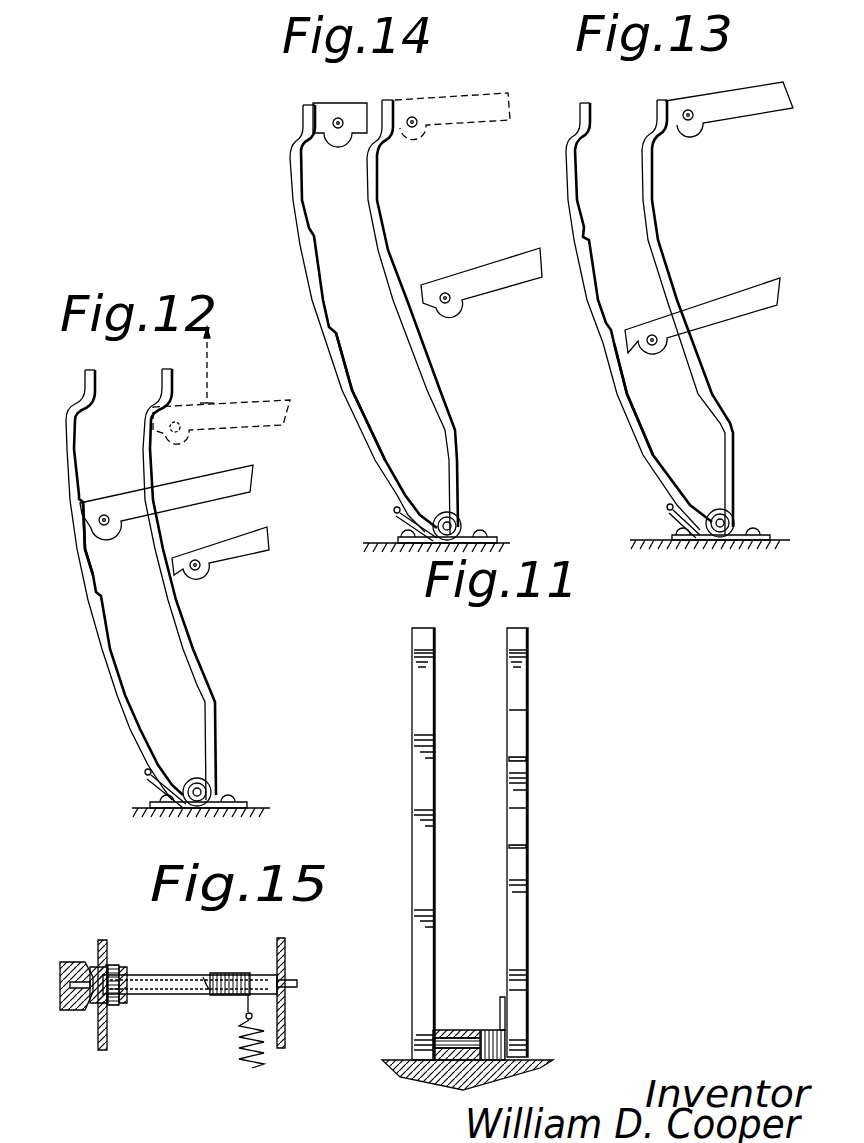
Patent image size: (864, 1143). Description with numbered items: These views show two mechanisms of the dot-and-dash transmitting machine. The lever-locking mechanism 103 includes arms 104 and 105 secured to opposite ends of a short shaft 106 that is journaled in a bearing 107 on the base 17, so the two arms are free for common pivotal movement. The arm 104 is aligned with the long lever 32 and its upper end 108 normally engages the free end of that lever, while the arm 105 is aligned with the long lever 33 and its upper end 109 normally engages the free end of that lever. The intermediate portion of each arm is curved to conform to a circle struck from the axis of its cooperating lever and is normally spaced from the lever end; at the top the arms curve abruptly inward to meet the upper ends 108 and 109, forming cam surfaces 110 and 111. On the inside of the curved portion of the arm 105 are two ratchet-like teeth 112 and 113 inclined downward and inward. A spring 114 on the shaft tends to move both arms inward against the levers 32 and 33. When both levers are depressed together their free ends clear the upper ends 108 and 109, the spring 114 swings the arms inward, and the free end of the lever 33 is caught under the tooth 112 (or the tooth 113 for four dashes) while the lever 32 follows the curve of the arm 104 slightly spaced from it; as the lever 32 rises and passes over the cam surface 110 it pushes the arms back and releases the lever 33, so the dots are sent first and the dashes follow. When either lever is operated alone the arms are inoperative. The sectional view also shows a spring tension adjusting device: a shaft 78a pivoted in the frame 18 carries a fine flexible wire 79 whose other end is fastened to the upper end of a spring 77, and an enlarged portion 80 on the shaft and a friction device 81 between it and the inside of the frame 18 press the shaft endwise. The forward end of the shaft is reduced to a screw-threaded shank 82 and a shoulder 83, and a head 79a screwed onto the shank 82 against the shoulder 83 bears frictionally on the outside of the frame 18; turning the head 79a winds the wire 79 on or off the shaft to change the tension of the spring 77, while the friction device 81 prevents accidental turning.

In FIG. 12, the base 17 is at (254, 811).
In FIG. 14, the base 17 is at (512, 543).
In FIG. 13, the base 17 is at (743, 545).
In FIG. 11, the base 17 is at (548, 1061).
In FIG. 15, the frame 18 is at (288, 1028).
In FIG. 12, the long lever 32 is at (285, 388).
In FIG. 14, the long lever 32 is at (520, 80).
In FIG. 13, the long lever 32 is at (748, 100).
In FIG. 12, the long lever 33 is at (236, 473).
In FIG. 14, the long lever 33 is at (358, 105).
In FIG. 13, the long lever 33 is at (723, 296).
In FIG. 15, the spring 77 is at (250, 1068).
In FIG. 15, the shaft 78a is at (175, 982).
In FIG. 15, the fine flexible wire 79 is at (240, 1002).
In FIG. 15, the head 79a is at (60, 985).
In FIG. 15, the enlarged portion 80 is at (122, 968).
In FIG. 15, the friction device 81 is at (114, 962).
In FIG. 15, the shank 82 is at (75, 1010).
In FIG. 15, the shoulder 83 is at (112, 1003).
In FIG. 12, the lever-locking mechanism 103 is at (87, 598).
In FIG. 14, the lever-locking mechanism 103 is at (300, 275).
In FIG. 13, the lever-locking mechanism 103 is at (612, 398).
In FIG. 11, the lever-locking mechanism 103 is at (532, 722).
In FIG. 12, the arm 104 is at (192, 632).
In FIG. 14, the arm 104 is at (440, 377).
In FIG. 13, the arm 104 is at (700, 358).
In FIG. 11, the arm 104 is at (426, 812).
In FIG. 12, the arm 105 is at (115, 660).
In FIG. 14, the arm 105 is at (360, 403).
In FIG. 13, the arm 105 is at (636, 412).
In FIG. 11, the arm 105 is at (524, 778).
In FIG. 12, the short shaft 106 is at (206, 787).
In FIG. 14, the short shaft 106 is at (459, 520).
In FIG. 13, the short shaft 106 is at (732, 518).
In FIG. 11, the short shaft 106 is at (456, 1045).
In FIG. 12, the bearing 107 is at (247, 805).
In FIG. 14, the bearing 107 is at (504, 538).
In FIG. 13, the bearing 107 is at (676, 543).
In FIG. 11, the bearing 107 is at (448, 1028).
In FIG. 12, the upper end of arm 104 108 is at (168, 378).
In FIG. 14, the upper end of arm 104 108 is at (400, 100).
In FIG. 13, the upper end of arm 104 108 is at (672, 100).
In FIG. 11, the upper end of arm 104 108 is at (428, 640).
In FIG. 12, the upper end of arm 105 109 is at (92, 378).
In FIG. 14, the upper end of arm 105 109 is at (312, 106).
In FIG. 13, the upper end of arm 105 109 is at (588, 108).
In FIG. 11, the upper end of arm 105 109 is at (529, 633).
In FIG. 12, the cam surface 110 is at (167, 395).
In FIG. 14, the cam surface 110 is at (382, 135).
In FIG. 13, the cam surface 110 is at (655, 132).
In FIG. 12, the cam surface 111 is at (95, 405).
In FIG. 14, the cam surface 111 is at (303, 140).
In FIG. 13, the cam surface 111 is at (582, 133).
In FIG. 12, the ratchet-like tooth 112 is at (82, 497).
In FIG. 14, the ratchet-like tooth 112 is at (311, 230).
In FIG. 13, the ratchet-like tooth 112 is at (588, 222).
In FIG. 11, the ratchet-like tooth 112 is at (528, 757).
In FIG. 12, the ratchet-like tooth 113 is at (100, 592).
In FIG. 14, the ratchet-like tooth 113 is at (338, 323).
In FIG. 13, the ratchet-like tooth 113 is at (610, 328).
In FIG. 11, the ratchet-like tooth 113 is at (528, 846).
In FIG. 12, the spring 114 is at (148, 775).
In FIG. 14, the spring 114 is at (395, 510).
In FIG. 13, the spring 114 is at (668, 508).
In FIG. 11, the spring 114 is at (504, 1035).